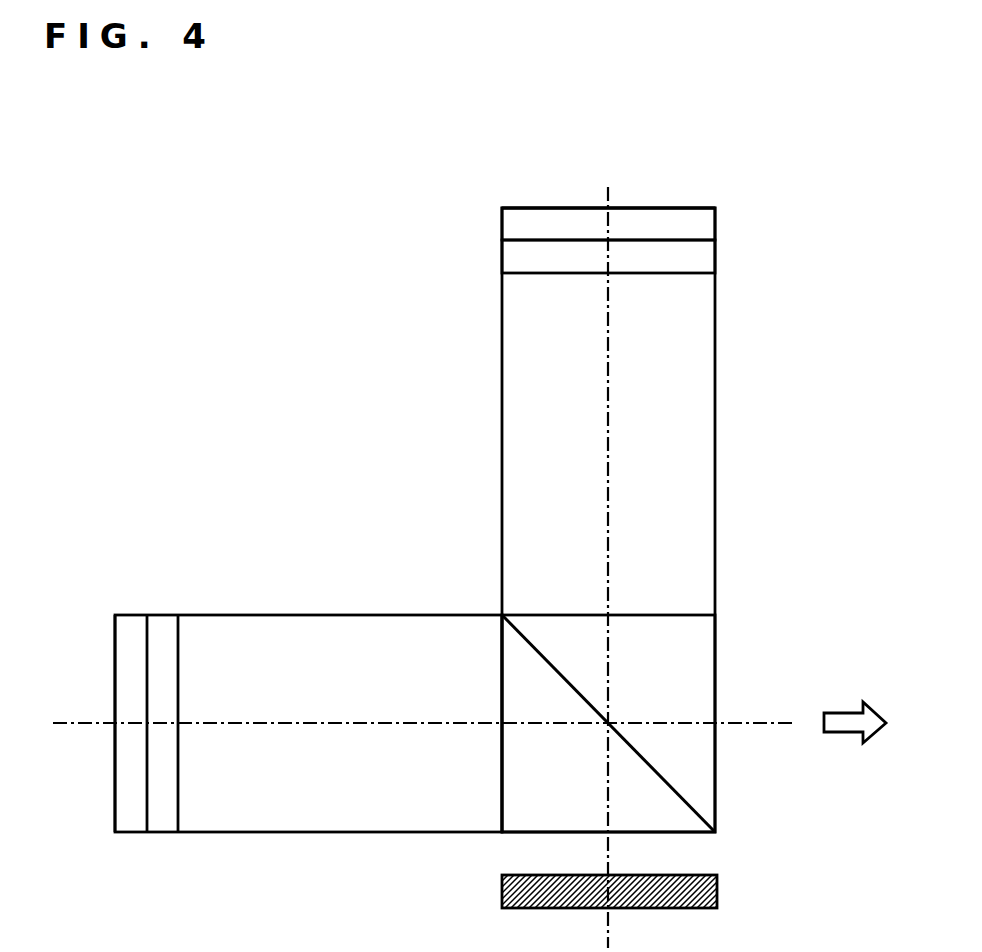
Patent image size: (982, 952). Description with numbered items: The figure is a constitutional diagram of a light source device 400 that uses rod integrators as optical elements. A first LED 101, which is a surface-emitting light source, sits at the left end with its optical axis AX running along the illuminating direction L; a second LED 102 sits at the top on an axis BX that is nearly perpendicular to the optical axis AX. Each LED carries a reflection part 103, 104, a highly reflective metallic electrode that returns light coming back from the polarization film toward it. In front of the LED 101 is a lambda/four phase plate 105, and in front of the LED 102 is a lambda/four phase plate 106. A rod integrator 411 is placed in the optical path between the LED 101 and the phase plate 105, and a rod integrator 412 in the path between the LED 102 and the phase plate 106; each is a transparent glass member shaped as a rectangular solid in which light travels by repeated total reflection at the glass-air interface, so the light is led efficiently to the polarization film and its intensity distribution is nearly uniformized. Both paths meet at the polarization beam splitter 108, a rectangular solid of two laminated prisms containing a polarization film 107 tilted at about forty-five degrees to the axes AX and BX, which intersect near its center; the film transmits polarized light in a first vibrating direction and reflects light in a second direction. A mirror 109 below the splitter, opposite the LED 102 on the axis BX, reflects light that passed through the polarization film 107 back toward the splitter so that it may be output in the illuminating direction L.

The light source device 400 is at (813, 187).
The rod integrator 412 is at (706, 557).
The rod integrator 411 is at (333, 636).
The LED 102 is at (704, 227).
The lambda/4 phase plate 106 is at (704, 265).
The reflection part 104 is at (576, 211).
The polarization beam splitter 108 is at (706, 637).
The polarization film 107 is at (696, 811).
The mirror 109 is at (716, 889).
The LED 101 is at (130, 626).
The lambda/4 phase plate 105 is at (172, 626).
The reflection part 103 is at (117, 790).
The optical axis AX is at (92, 722).
The axis BX is at (610, 930).
The illuminating direction L is at (850, 713).